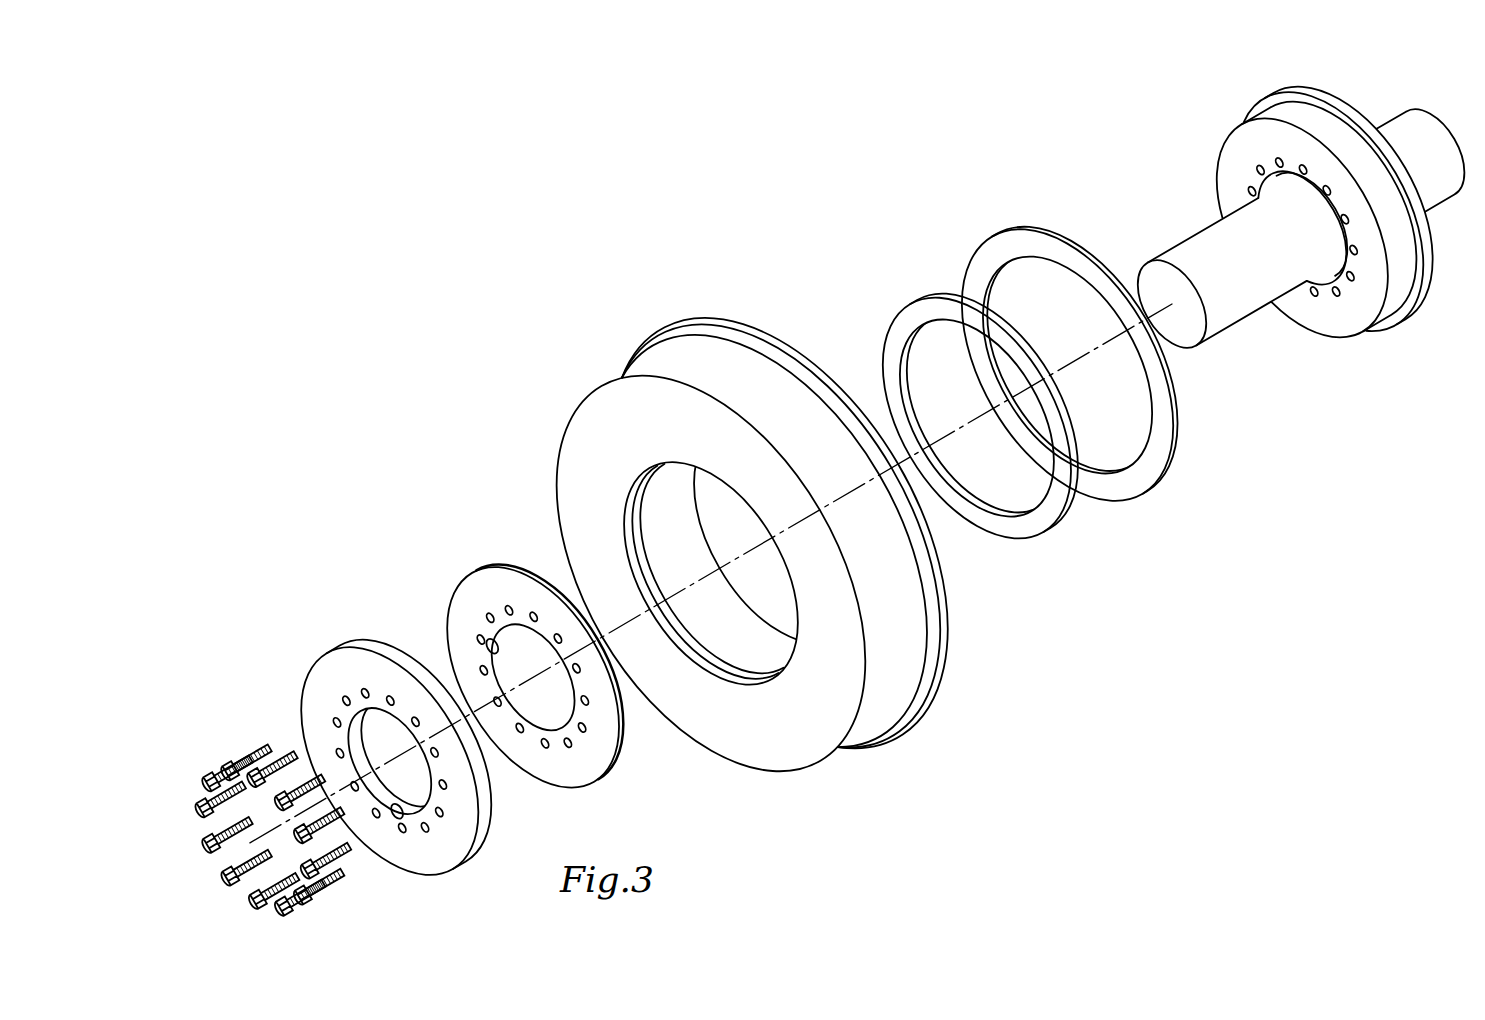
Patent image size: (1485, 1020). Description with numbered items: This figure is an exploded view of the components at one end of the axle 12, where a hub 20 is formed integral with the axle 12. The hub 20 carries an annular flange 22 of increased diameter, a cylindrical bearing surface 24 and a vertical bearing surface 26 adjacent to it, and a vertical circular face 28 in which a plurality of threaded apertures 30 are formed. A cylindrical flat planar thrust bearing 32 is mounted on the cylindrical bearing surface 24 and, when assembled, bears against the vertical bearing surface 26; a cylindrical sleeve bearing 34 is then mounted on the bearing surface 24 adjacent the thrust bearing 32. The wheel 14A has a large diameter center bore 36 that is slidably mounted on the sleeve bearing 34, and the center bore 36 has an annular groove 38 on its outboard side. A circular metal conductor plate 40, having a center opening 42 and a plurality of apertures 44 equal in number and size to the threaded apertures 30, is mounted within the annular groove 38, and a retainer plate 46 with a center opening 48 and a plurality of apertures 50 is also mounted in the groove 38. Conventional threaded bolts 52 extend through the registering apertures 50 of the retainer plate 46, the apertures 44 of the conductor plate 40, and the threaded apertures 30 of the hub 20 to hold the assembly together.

The axle 12 is at (1214, 338).
The wheel 14A is at (709, 312).
The hub 20 is at (1260, 124).
The annular flange 22 is at (1283, 90).
The cylindrical bearing surface 24 is at (1307, 124).
The vertical bearing surface 26 is at (1420, 272).
The vertical circular face 28 is at (1275, 161).
The threaded apertures 30 is at (1258, 174).
The thrust bearing 32 is at (1158, 478).
The sleeve bearing 34 is at (980, 530).
The center bore 36 is at (677, 553).
The annular groove 38 is at (640, 560).
The conductor plate 40 is at (491, 560).
The center opening 42 is at (497, 648).
The apertures 44 is at (533, 611).
The retainer plate 46 is at (309, 658).
The center opening 48 is at (397, 820).
The apertures 50 is at (337, 749).
The threaded bolts 52 is at (205, 830).